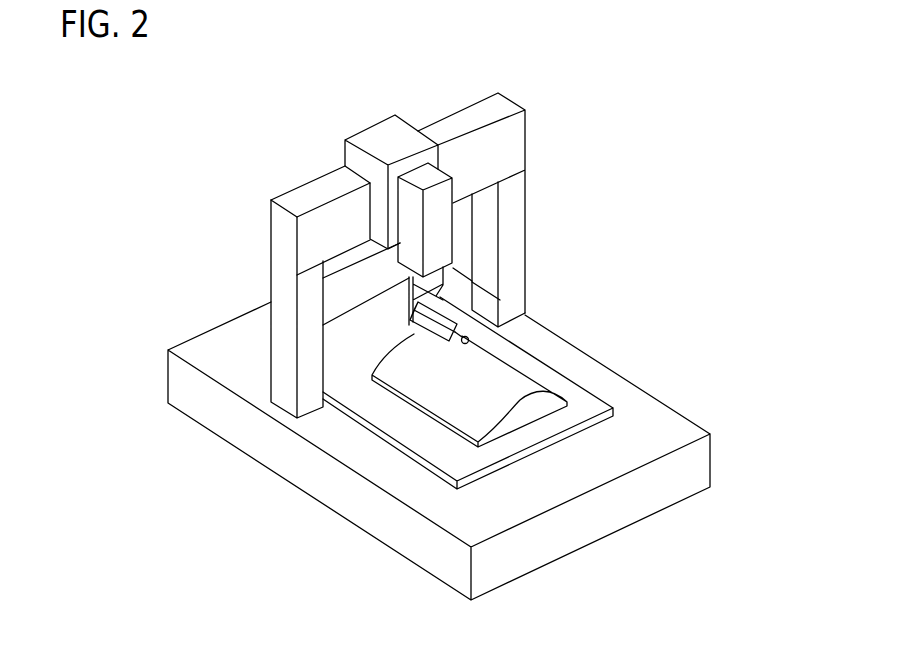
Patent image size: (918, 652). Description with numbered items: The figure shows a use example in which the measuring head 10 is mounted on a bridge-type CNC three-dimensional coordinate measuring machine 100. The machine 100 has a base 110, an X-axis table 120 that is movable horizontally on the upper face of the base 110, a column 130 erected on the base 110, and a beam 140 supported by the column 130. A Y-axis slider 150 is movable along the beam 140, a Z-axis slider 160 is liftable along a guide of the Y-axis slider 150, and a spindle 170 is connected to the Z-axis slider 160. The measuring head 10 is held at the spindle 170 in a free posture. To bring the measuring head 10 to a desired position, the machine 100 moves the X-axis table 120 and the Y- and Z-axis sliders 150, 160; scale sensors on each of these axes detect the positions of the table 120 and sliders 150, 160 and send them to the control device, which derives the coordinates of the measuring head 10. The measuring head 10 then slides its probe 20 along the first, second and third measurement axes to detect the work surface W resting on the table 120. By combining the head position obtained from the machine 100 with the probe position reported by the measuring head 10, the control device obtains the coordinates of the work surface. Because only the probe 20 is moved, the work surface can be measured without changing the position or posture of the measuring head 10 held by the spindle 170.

The three-dimensional measuring machine 100 is at (732, 298).
The base 110 is at (573, 535).
The X-axis table 120 is at (598, 397).
The column 130 is at (515, 222).
The beam 140 is at (515, 143).
The Y-axis slider 150 is at (384, 133).
The Z-axis slider 160 is at (410, 220).
The spindle 170 is at (430, 298).
The measuring head 10 is at (438, 322).
The probe 20 is at (466, 346).